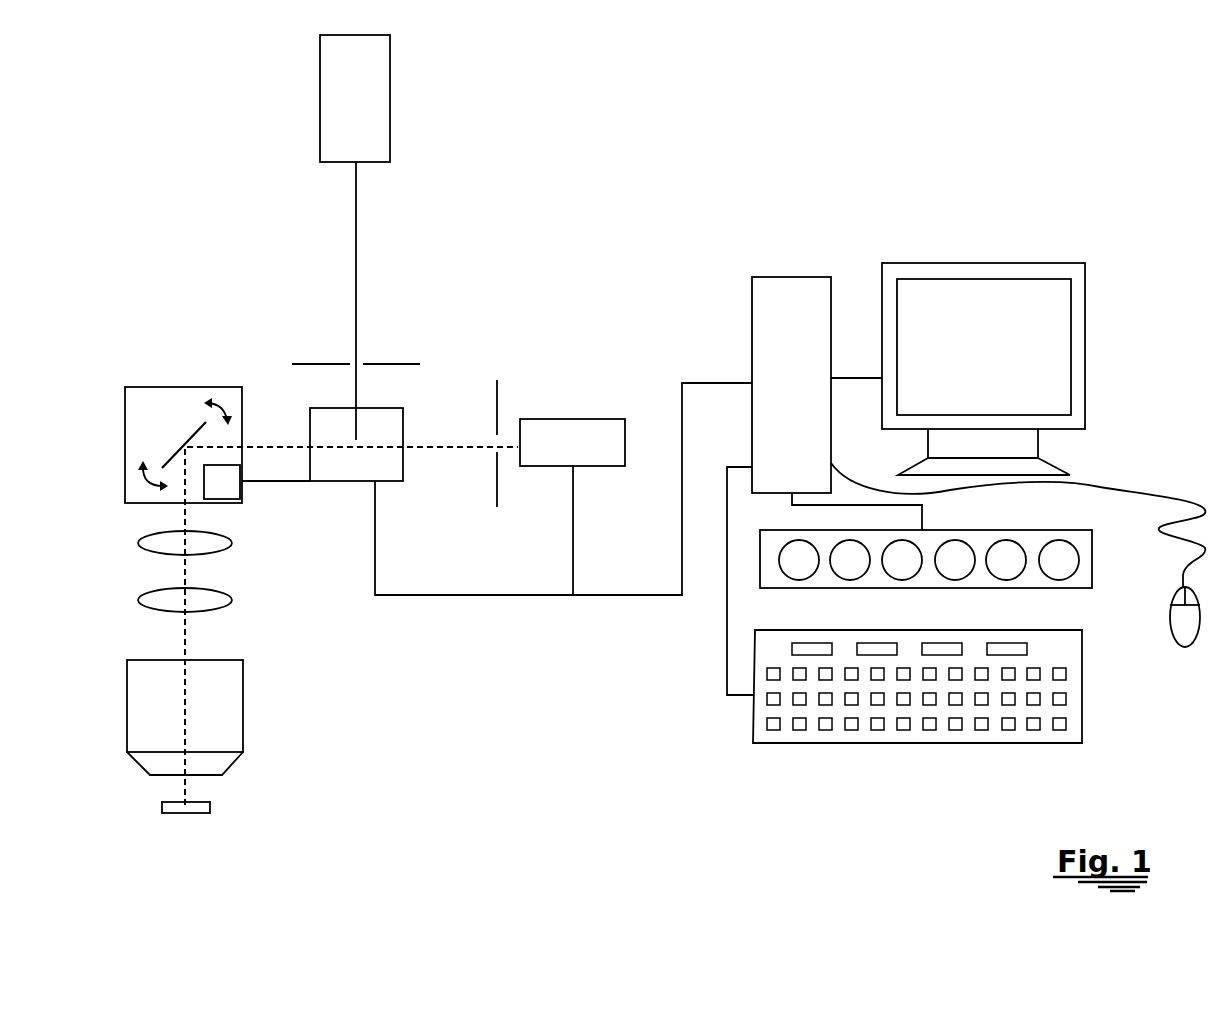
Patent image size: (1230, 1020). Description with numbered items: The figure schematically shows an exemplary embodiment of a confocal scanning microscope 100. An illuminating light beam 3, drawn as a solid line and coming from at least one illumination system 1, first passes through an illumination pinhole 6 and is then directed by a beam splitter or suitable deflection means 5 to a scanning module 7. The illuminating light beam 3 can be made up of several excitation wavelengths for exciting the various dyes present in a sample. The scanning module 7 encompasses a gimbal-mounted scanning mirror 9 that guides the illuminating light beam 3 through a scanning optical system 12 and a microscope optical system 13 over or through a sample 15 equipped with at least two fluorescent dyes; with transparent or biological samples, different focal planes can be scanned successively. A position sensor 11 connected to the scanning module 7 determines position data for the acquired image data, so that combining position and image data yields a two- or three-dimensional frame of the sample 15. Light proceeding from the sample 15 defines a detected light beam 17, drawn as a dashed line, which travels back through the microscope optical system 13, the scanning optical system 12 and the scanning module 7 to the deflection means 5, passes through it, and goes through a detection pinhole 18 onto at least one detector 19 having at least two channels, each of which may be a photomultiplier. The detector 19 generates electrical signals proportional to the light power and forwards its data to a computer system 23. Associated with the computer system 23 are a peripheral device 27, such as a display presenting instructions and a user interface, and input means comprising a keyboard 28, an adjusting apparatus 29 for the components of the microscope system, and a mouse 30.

The illumination system 1 is at (380, 78).
The illuminating light beam 3 is at (356, 195).
The confocal scanning microscope 100 is at (434, 320).
The deflection means 5 is at (382, 473).
The illumination pinhole 6 is at (309, 364).
The scanning module 7 is at (148, 408).
The scanning mirror 9 is at (172, 451).
The position sensor 11 is at (228, 488).
The scanning optical system 12 is at (160, 543).
The microscope optical system 13 is at (150, 687).
The sample 15 is at (175, 803).
The detected light beam 17 is at (413, 443).
The detection pinhole 18 is at (497, 402).
The detector 19 is at (540, 432).
The computer system 23 is at (762, 322).
The peripheral device 27 is at (950, 300).
The keyboard 28 is at (1057, 650).
The adjusting apparatus 29 is at (987, 530).
The mouse 30 is at (1183, 622).